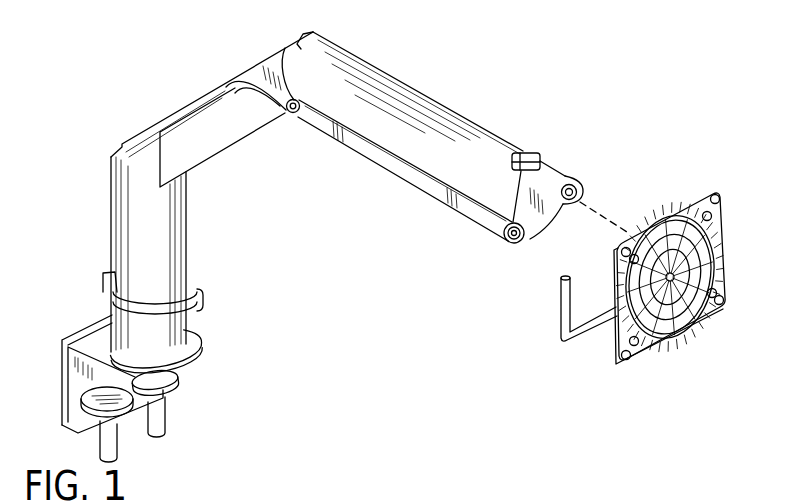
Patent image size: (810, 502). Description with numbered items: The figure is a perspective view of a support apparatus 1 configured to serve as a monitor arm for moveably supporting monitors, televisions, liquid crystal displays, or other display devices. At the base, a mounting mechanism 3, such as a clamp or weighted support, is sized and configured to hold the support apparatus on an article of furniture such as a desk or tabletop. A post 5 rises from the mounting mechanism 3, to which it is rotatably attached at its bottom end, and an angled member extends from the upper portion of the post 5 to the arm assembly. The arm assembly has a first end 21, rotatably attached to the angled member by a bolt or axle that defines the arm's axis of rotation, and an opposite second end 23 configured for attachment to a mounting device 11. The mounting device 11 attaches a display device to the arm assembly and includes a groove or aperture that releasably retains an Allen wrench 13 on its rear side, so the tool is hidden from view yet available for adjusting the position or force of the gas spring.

The support apparatus 1 is at (560, 123).
The mounting mechanism 3 is at (102, 324).
The post 5 is at (188, 250).
The mounting device 11 is at (680, 337).
The Allen wrench 13 is at (560, 322).
The first end of the arm assembly 21 is at (266, 64).
The second end of the arm assembly 23 is at (507, 239).